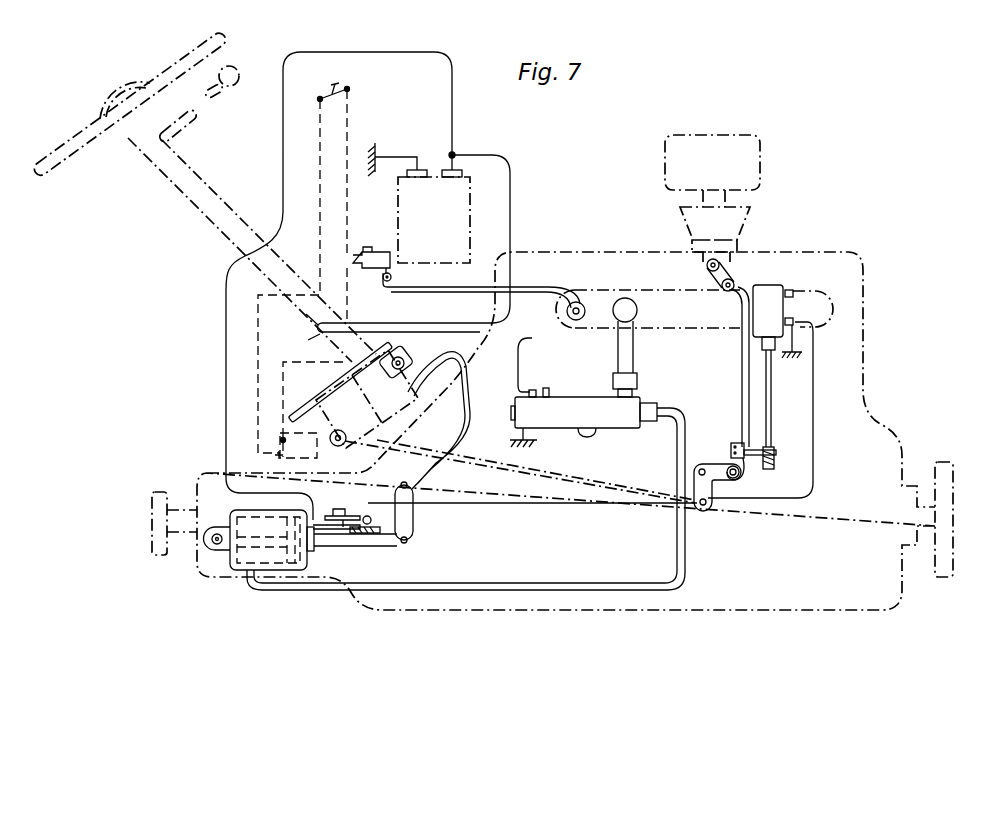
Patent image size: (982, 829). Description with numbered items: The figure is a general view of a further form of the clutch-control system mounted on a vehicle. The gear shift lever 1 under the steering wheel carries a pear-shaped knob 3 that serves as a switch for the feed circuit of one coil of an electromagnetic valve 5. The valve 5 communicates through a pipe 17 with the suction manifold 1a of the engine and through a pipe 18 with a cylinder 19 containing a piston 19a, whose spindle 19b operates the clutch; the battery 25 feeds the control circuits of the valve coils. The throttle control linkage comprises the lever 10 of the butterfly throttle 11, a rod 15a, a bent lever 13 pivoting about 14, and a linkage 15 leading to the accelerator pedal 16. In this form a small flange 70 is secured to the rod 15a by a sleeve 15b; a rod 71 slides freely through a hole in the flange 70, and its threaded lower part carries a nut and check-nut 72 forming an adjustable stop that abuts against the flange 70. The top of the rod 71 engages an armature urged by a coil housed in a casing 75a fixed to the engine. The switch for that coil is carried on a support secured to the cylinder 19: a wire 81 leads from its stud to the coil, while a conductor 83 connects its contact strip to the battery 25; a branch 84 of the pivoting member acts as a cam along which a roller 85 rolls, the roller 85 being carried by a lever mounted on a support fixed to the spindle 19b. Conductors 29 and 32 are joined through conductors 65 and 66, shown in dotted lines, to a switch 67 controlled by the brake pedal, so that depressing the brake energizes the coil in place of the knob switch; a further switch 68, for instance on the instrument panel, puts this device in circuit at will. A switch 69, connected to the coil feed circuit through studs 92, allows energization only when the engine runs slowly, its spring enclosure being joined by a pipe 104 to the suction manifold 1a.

The gear shift lever 1 is at (195, 110).
The pear-shaped knob 3 is at (228, 86).
The conductor 83 is at (331, 53).
The switch 68 is at (345, 80).
The conductor 65 is at (320, 265).
The studs 92 is at (350, 250).
The switch 69 is at (363, 250).
The conductor 66 is at (293, 363).
The accelerator pedal 16 is at (323, 393).
The switch 67 is at (296, 446).
The battery 25 is at (463, 222).
The pipe 104 is at (533, 288).
The conductor 32 is at (424, 306).
The conductor 29 is at (532, 359).
The suction manifold 1a is at (640, 297).
The butterfly throttle 11 is at (707, 267).
The lever 10 is at (734, 280).
The casing 75a is at (776, 290).
The pipe 17 is at (628, 353).
The electromagnetic valve 5 is at (572, 400).
The rod 15a is at (743, 370).
The rod 71 is at (773, 420).
The sleeve 15b is at (733, 447).
The pivot 14 is at (705, 457).
The nut and check-nut 72 is at (777, 462).
The pipe 18 is at (680, 472).
The linkage 15 is at (593, 469).
The bent lever 13 is at (720, 485).
The small flange 70 is at (757, 460).
The wire 81 is at (590, 505).
The cylinder 19 is at (240, 513).
The branch 84 is at (338, 509).
The roller 85 is at (367, 514).
The spindle 19b is at (370, 540).
The piston 19a is at (280, 562).